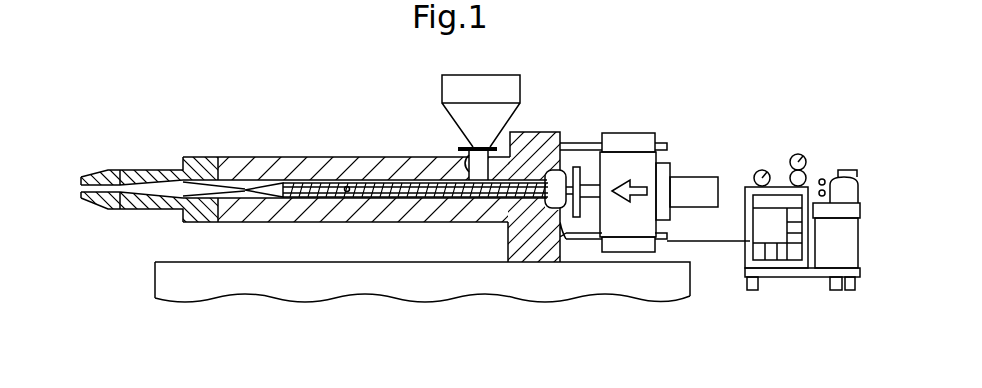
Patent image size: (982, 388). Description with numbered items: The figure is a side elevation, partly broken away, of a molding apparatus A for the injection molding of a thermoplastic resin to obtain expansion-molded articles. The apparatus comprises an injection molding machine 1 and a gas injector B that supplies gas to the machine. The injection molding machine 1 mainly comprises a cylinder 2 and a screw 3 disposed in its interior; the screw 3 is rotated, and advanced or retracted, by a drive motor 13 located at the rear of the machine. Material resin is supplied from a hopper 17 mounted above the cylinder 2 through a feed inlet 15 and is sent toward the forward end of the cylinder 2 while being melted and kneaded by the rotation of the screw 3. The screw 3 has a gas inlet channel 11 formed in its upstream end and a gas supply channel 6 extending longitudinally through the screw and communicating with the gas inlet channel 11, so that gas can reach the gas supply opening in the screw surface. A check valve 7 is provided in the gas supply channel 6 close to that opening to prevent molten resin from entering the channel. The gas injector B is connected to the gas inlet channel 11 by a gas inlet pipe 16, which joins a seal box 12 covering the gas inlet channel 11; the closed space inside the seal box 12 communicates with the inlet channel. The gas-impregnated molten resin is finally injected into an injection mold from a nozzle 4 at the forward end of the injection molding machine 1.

The injection molding machine 1 is at (297, 168).
The cylinder 2 is at (248, 217).
The screw 3 is at (407, 197).
The nozzle 4 is at (78, 177).
The gas supply channel 6 is at (390, 194).
The check valve 7 is at (347, 193).
The gas inlet channel 11 is at (540, 200).
The seal box 12 is at (558, 182).
The drive motor 13 is at (633, 135).
The feed inlet 15 is at (468, 156).
The gas inlet pipe 16 is at (720, 241).
The hopper 17 is at (452, 88).
The molding apparatus A is at (222, 116).
The gas injector B is at (795, 277).